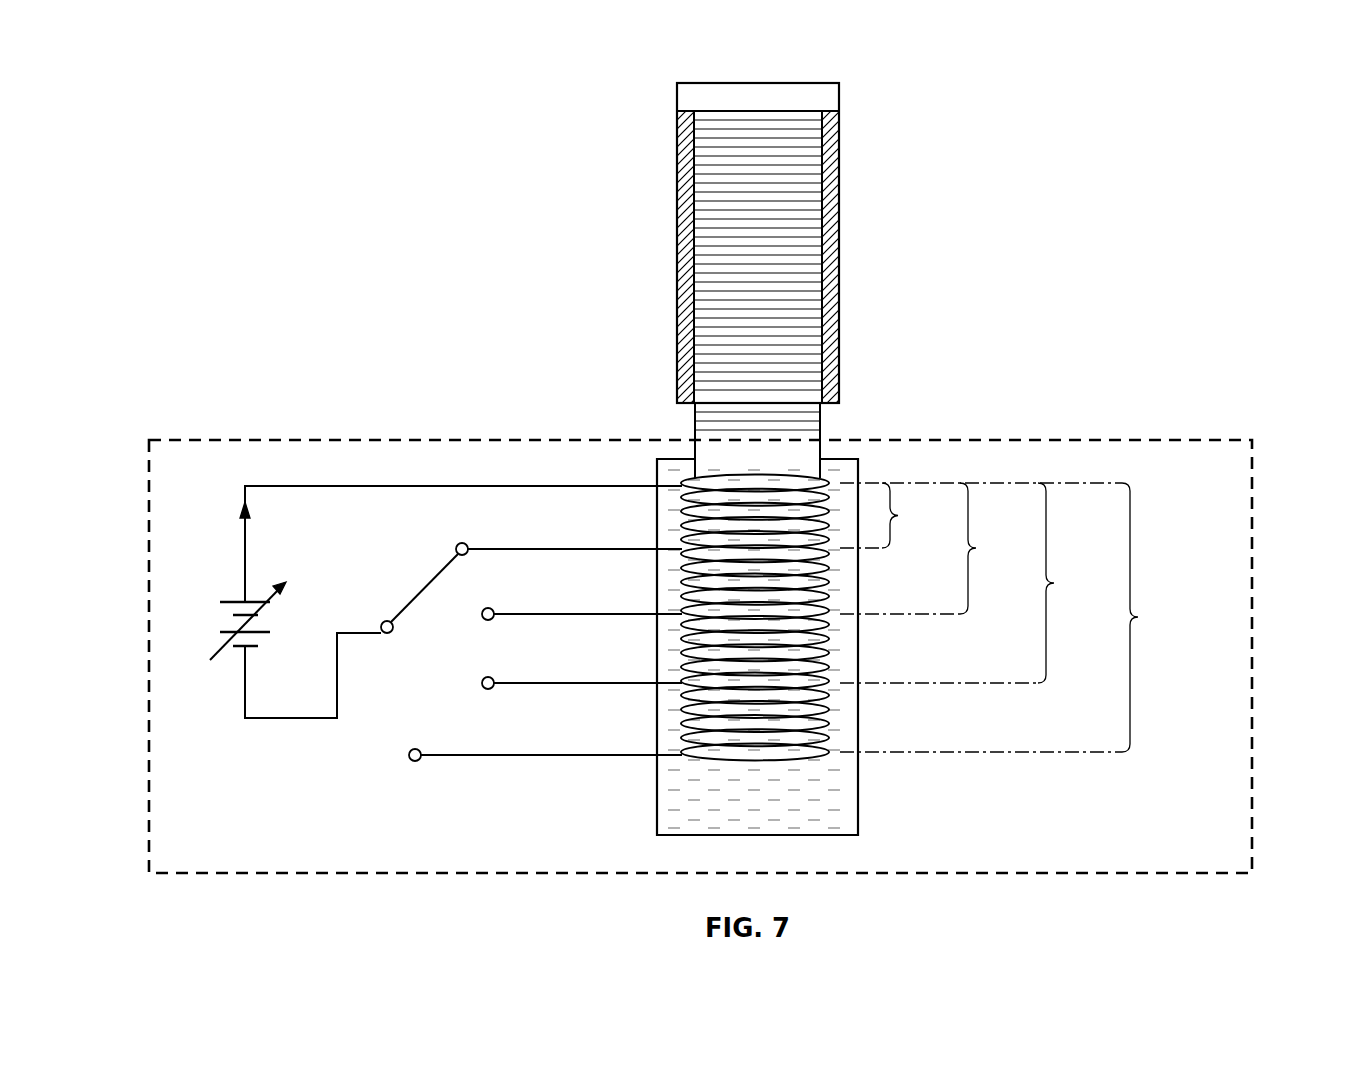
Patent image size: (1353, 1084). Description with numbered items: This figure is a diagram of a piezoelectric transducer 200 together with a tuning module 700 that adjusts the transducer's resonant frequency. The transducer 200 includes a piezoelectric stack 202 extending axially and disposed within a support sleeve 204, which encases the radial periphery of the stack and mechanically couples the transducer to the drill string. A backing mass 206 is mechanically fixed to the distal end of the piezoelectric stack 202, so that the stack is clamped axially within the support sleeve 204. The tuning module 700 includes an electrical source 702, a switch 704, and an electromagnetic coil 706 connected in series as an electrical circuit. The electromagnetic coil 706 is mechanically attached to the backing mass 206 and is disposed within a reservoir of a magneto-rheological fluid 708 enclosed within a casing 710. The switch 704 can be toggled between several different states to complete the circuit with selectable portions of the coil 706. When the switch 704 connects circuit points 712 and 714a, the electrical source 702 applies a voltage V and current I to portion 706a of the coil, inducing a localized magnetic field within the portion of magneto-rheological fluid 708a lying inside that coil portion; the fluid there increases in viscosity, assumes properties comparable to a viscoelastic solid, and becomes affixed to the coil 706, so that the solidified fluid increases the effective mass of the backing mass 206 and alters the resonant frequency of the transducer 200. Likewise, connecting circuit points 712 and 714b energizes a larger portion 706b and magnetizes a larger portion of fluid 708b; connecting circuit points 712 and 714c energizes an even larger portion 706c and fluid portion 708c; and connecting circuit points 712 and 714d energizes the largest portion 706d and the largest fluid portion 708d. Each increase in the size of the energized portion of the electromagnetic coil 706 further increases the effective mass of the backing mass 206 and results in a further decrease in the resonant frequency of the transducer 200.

The piezoelectric transducer 200 is at (716, 269).
The piezoelectric stack 202 is at (712, 192).
The support sleeve 204 is at (832, 263).
The backing mass 206 is at (782, 424).
The tuning module 700 is at (463, 405).
The electrical source 702 is at (222, 658).
The switch 704 is at (515, 627).
The electromagnetic coil 706 is at (735, 757).
The portion of electromagnetic coil 706a is at (981, 515).
The portion of electromagnetic coil 706b is at (940, 548).
The portion of electromagnetic coil 706c is at (980, 583).
The portion of electromagnetic coil 706d is at (1023, 617).
The magneto-rheological fluid 708 is at (763, 655).
The portion of magneto-rheological fluid 708a is at (841, 534).
The portion of magneto-rheological fluid 708b is at (842, 582).
The portion of magneto-rheological fluid 708c is at (842, 643).
The portion of magneto-rheological fluid 708d is at (842, 713).
The casing 710 is at (658, 818).
The circuit point 712 is at (388, 634).
The circuit point 714a is at (493, 521).
The circuit point 714b is at (517, 586).
The circuit point 714c is at (517, 655).
The circuit point 714d is at (445, 727).